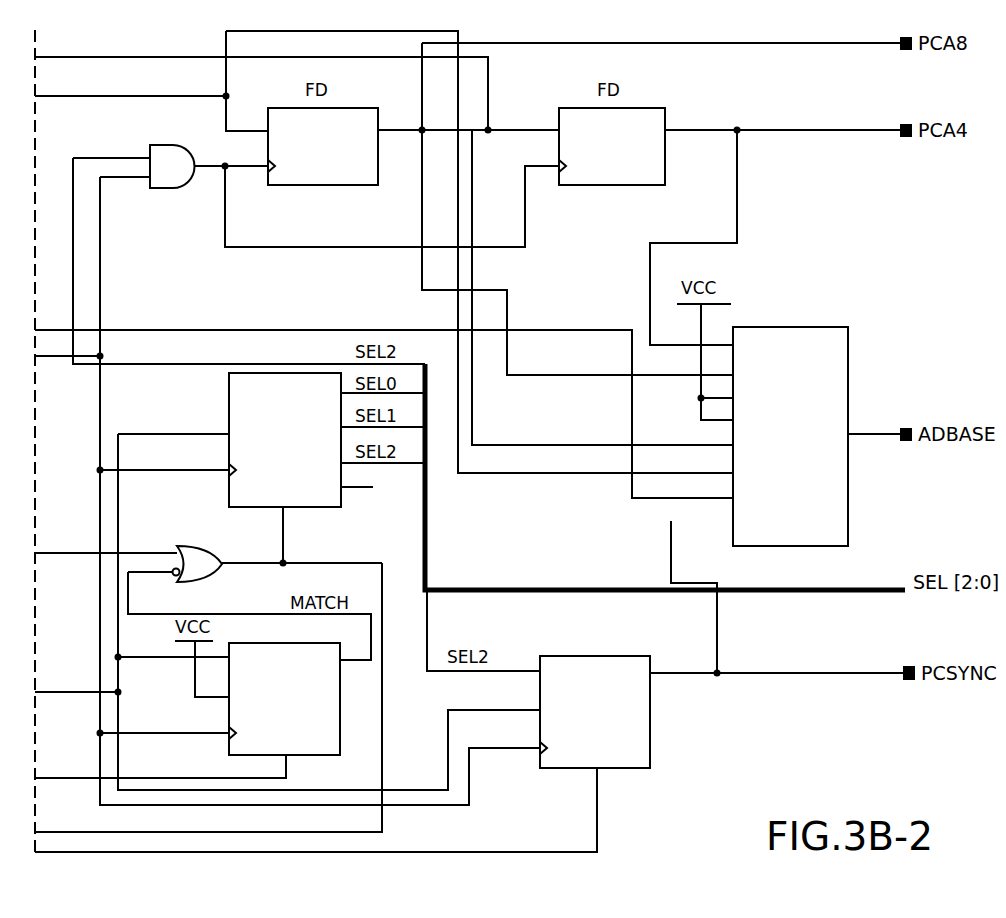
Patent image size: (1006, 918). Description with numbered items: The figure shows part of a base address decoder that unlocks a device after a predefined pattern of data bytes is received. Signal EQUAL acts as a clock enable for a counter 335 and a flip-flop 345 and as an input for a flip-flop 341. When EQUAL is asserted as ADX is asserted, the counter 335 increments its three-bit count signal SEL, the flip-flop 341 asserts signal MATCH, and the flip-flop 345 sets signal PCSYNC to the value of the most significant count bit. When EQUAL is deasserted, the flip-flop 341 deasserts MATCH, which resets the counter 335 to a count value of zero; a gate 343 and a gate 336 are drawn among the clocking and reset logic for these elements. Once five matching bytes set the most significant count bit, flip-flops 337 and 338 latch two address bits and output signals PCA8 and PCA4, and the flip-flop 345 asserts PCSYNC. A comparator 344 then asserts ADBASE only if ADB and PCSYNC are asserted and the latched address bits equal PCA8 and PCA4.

The counter 335 is at (229, 425).
The AND gate 336 is at (172, 145).
The flip-flop 337 is at (358, 187).
The flip-flop 338 is at (645, 187).
The flip-flop 341 is at (340, 690).
The NOR gate 343 is at (195, 546).
The comparator 344 is at (848, 508).
The flip-flop 345 is at (650, 738).